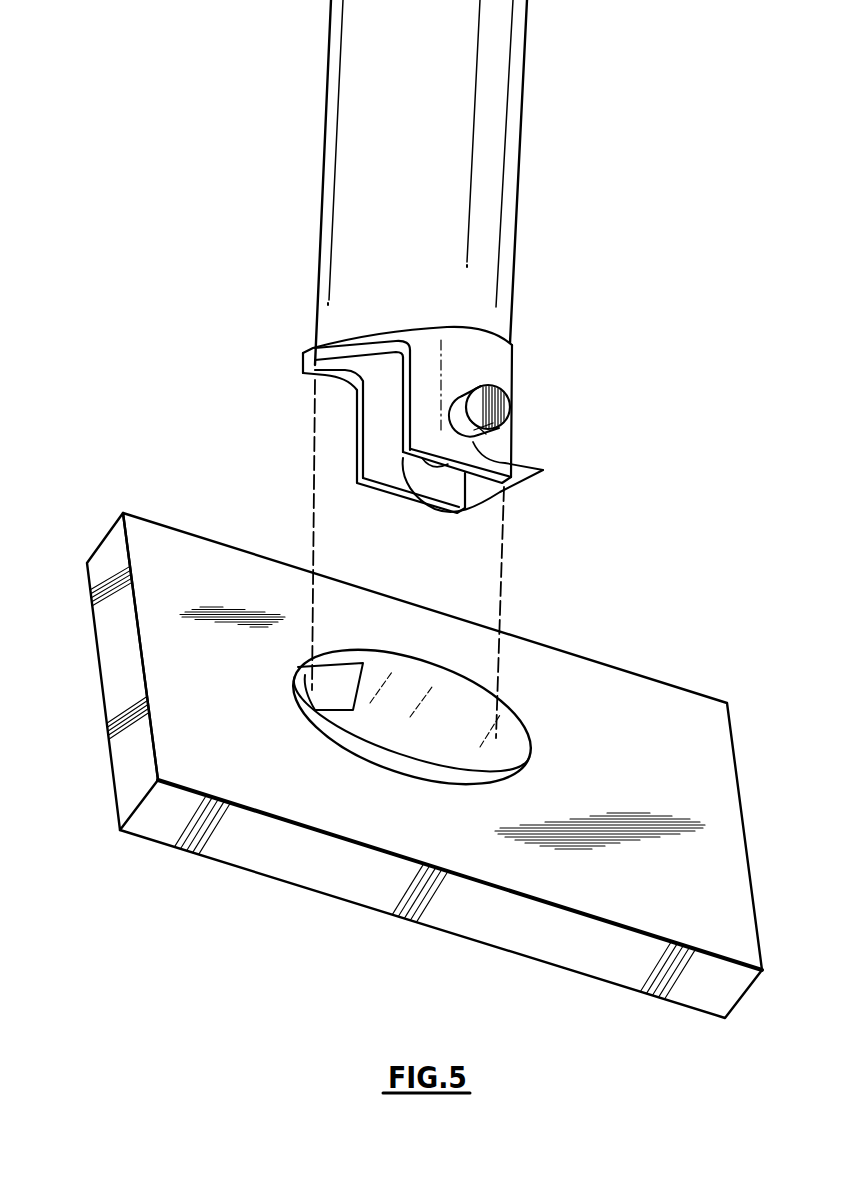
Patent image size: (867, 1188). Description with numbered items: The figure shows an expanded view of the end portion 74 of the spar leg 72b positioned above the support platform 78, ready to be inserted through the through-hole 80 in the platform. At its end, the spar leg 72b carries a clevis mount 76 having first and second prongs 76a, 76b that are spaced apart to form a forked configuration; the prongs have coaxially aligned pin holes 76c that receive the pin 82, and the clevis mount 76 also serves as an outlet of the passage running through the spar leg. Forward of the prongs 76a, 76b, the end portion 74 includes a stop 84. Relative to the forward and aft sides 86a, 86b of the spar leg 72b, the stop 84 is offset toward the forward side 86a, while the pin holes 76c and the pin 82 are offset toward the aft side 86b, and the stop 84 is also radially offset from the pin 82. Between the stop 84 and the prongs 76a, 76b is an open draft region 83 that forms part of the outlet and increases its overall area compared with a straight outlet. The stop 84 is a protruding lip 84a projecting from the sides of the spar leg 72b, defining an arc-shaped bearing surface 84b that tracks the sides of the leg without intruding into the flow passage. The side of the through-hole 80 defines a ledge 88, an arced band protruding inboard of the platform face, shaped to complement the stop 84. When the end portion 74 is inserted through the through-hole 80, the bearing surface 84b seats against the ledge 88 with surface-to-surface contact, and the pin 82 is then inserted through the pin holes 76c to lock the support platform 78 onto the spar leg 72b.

The spar leg 72b is at (415, 369).
The forward side 86a is at (318, 240).
The aft side 86b is at (513, 202).
The end portion 74 is at (520, 515).
The clevis mount 76 is at (427, 437).
The first prong 76a is at (425, 432).
The second prong 76b is at (385, 398).
The pin holes 76c is at (495, 477).
The pin 82 is at (510, 410).
The draft region 83 is at (380, 368).
The stop 84 is at (266, 368).
The protruding lip 84a is at (338, 347).
The bearing surface 84b is at (327, 381).
The support platform 78 is at (183, 757).
The through-hole 80 is at (477, 710).
The ledge 88 is at (338, 652).